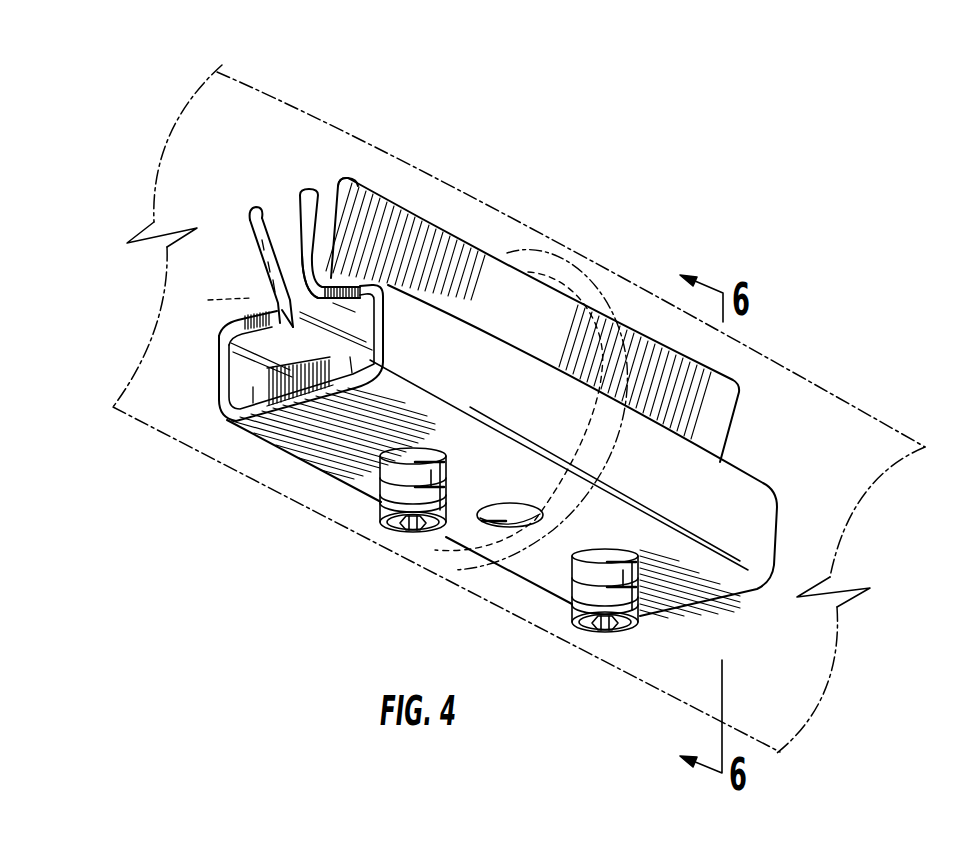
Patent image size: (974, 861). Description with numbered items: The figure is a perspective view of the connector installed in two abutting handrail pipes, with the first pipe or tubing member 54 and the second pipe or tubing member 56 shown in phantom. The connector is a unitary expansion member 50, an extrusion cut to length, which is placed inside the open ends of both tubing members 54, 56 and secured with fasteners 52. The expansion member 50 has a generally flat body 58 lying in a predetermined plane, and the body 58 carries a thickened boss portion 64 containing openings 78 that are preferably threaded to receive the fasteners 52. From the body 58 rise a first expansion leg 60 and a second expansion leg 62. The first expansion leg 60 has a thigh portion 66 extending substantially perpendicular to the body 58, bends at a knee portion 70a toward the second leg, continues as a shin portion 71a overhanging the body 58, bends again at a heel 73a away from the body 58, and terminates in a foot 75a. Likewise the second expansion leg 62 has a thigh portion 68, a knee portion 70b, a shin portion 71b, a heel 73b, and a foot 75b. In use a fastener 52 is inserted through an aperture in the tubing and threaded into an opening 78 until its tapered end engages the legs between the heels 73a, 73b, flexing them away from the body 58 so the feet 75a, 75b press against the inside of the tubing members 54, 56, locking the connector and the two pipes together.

The unitary expansion member 50 is at (792, 498).
The fastener 52 is at (413, 528).
The first pipe or tubing member 54 is at (297, 138).
The second pipe or tubing member 56 is at (830, 425).
The body 58 is at (723, 470).
The first expansion leg 60 is at (355, 232).
The second expansion leg 62 is at (305, 250).
The boss portion 64 is at (338, 457).
The thigh portion 66 is at (386, 312).
The thigh portion 68 is at (218, 393).
The knee portion 70a is at (313, 240).
The knee portion 70b is at (219, 336).
The shin portion 71a is at (304, 260).
The shin portion 71b is at (253, 312).
The heel 73a is at (316, 287).
The heel 73b is at (289, 359).
The foot 75a is at (352, 180).
The foot 75b is at (250, 212).
The opening 78 is at (502, 525).